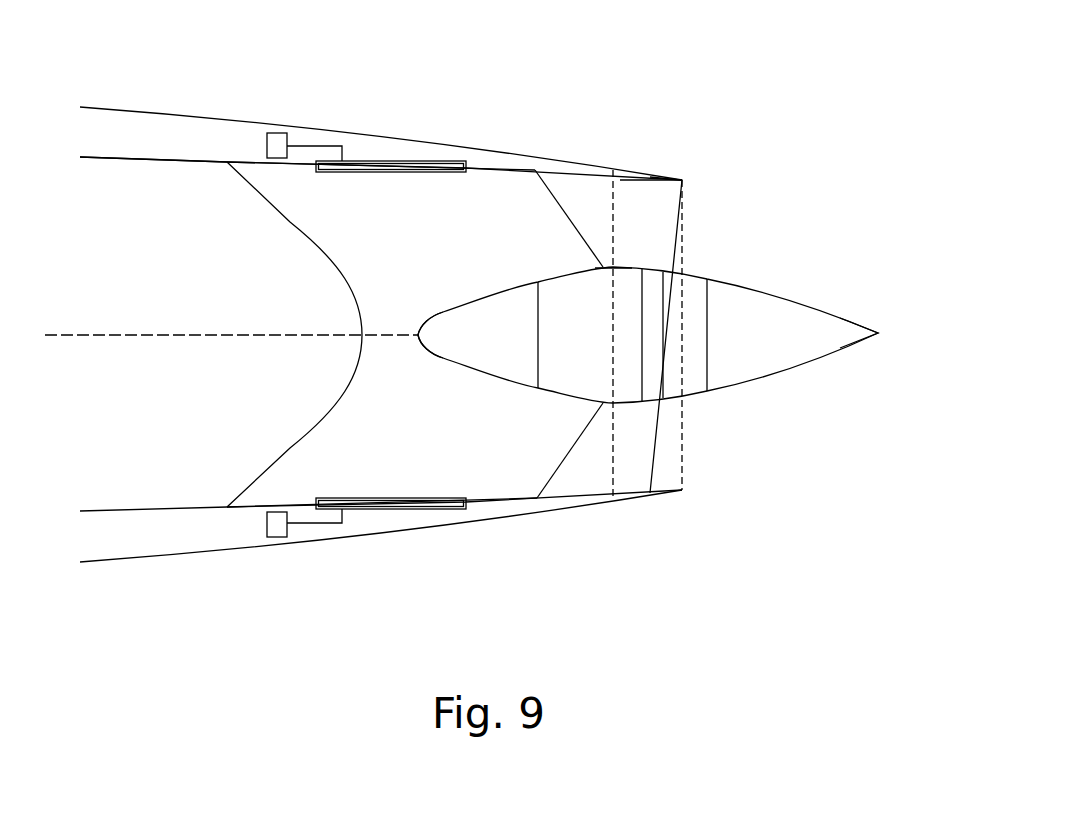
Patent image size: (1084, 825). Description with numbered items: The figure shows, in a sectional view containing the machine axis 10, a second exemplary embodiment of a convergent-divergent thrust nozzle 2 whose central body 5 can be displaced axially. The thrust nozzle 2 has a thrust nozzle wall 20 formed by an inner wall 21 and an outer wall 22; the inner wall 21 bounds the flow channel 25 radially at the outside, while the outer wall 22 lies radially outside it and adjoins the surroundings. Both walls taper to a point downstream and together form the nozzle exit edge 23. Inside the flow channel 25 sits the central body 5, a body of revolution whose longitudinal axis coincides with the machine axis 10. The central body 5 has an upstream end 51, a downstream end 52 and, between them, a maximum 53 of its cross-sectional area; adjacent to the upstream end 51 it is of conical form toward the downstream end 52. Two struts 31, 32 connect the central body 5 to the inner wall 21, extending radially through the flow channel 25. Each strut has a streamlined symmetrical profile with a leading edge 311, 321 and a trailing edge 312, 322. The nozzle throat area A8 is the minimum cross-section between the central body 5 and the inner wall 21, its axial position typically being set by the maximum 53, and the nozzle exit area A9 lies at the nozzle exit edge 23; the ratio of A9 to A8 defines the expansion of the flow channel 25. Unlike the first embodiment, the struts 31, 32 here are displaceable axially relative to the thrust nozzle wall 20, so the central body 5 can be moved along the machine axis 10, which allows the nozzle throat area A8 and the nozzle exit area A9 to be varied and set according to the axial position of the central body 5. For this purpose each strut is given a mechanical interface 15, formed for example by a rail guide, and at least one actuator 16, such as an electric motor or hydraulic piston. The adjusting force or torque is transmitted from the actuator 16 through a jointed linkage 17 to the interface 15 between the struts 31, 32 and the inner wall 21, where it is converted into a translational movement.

The thrust nozzle 2 is at (583, 78).
The central body 5 is at (772, 313).
The machine axis 10 is at (112, 335).
The mechanical interface 15 is at (433, 161).
The actuator 16 is at (277, 133).
The linkage 17 is at (318, 146).
The thrust nozzle wall 20 is at (208, 108).
The inner wall 21 is at (121, 160).
The outer wall 22 is at (128, 107).
The nozzle exit edge 23 is at (681, 179).
The flow channel 25 is at (153, 228).
The strut 31 is at (381, 211).
The strut 32 is at (382, 462).
The leading edge 311 is at (307, 233).
The trailing edge 312 is at (574, 227).
The leading edge 321 is at (288, 448).
The trailing edge 322 is at (573, 447).
The upstream end 51 is at (418, 338).
The downstream end 52 is at (878, 333).
The maximum of cross-sectional area 53 is at (613, 267).
The nozzle throat area A8 is at (615, 205).
The nozzle exit area A9 is at (682, 205).